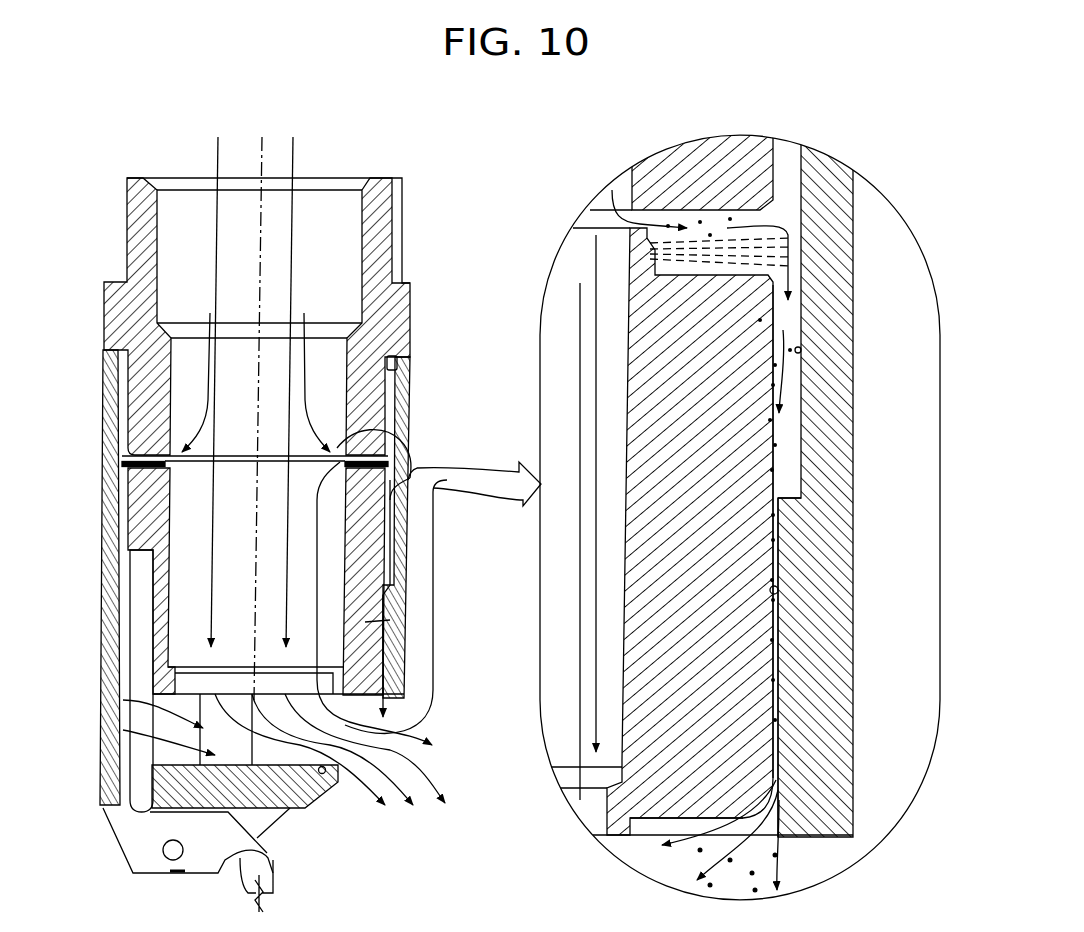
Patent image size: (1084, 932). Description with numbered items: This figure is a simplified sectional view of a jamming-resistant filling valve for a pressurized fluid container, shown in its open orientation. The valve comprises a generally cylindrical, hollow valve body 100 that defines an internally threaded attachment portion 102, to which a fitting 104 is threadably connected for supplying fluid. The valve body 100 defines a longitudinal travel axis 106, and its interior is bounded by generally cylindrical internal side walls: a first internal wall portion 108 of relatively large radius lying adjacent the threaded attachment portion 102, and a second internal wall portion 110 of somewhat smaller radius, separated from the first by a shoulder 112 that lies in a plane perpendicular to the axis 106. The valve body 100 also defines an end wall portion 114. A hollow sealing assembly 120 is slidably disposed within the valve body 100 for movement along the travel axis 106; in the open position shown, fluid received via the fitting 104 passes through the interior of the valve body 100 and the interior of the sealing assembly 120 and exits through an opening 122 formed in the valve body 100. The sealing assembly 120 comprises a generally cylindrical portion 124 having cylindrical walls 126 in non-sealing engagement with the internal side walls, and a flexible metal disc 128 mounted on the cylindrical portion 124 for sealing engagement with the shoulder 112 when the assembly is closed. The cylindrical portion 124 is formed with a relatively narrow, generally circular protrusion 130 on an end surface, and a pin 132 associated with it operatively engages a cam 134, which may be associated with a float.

The valve body 100 is at (420, 223).
The internally threaded attachment portion 102 is at (400, 430).
The fitting 104 is at (388, 323).
The longitudinal travel axis 106 is at (262, 152).
The first internal wall portion 108 is at (397, 452).
The second internal wall portion 110 is at (386, 588).
The shoulder 112 is at (392, 535).
The end wall portion 114 is at (326, 797).
The hollow sealing assembly 120 is at (370, 563).
The opening 122 is at (417, 753).
The cylindrical portion 124 is at (390, 620).
The cylindrical walls 126 is at (393, 497).
The flexible metal disc 128 is at (388, 464).
The circular protrusion 130 is at (612, 828).
The pin 132 is at (150, 812).
The cam 134 is at (273, 875).